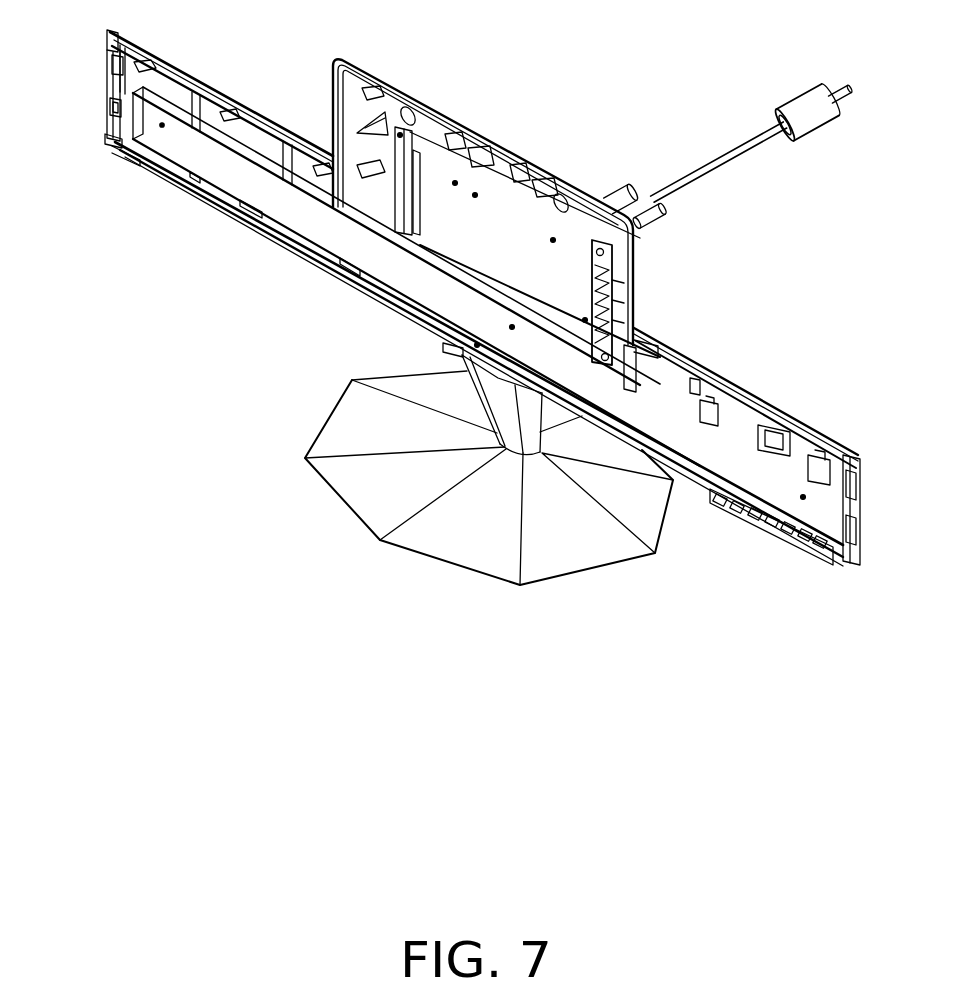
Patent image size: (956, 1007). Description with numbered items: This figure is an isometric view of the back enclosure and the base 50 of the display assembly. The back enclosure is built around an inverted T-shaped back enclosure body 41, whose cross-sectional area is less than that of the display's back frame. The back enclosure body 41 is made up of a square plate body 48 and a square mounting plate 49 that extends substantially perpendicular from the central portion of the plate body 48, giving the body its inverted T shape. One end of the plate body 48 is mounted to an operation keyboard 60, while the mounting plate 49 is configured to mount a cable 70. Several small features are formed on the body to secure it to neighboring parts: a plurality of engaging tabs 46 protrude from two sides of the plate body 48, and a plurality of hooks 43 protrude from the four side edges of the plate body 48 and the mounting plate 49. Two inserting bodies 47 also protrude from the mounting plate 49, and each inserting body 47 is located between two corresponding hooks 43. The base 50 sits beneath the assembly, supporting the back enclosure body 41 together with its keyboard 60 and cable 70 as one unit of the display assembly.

The back enclosure body 41 is at (723, 258).
The hooks 43 is at (140, 66).
The engaging tabs 46 is at (110, 110).
The inserting bodies 47 is at (360, 133).
The plate body 48 is at (702, 368).
The mounting plate 49 is at (632, 288).
The base 50 is at (453, 537).
The operation keyboard 60 is at (790, 547).
The cable 70 is at (639, 205).